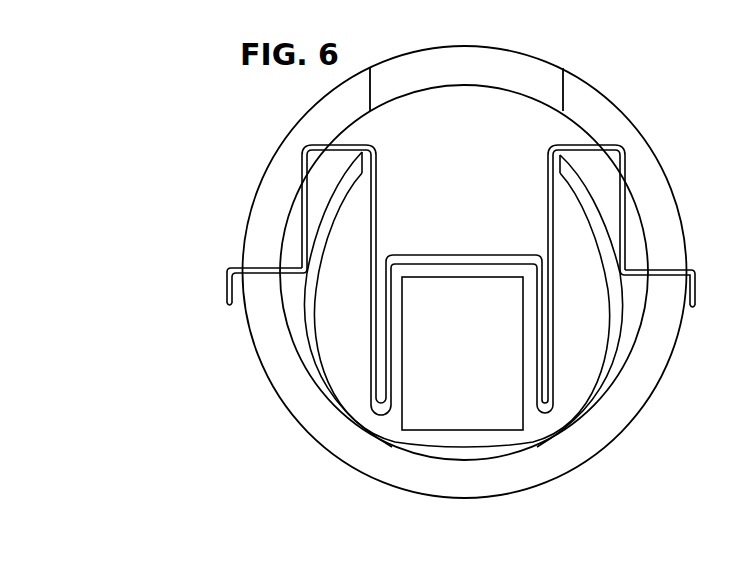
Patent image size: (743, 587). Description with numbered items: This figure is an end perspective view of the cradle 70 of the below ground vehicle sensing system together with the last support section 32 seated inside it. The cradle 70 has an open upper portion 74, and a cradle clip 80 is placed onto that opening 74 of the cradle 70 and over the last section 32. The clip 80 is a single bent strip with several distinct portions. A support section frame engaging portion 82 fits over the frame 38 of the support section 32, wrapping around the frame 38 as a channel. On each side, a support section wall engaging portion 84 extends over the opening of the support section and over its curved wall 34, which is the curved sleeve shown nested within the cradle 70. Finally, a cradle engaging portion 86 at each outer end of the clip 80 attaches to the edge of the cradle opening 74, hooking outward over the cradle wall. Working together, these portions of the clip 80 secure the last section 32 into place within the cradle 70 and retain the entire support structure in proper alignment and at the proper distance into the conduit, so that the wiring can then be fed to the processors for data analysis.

The cradle 70 is at (636, 418).
The open upper portion 74 is at (590, 104).
The cradle clip 80 is at (640, 240).
The last section 32 is at (620, 356).
The curved wall 34 is at (321, 357).
The frame 38 is at (413, 265).
The support section frame engaging portion 82 is at (448, 254).
The support section wall engaging portion 84 is at (362, 144).
The cradle engaging portion 86 is at (228, 268).